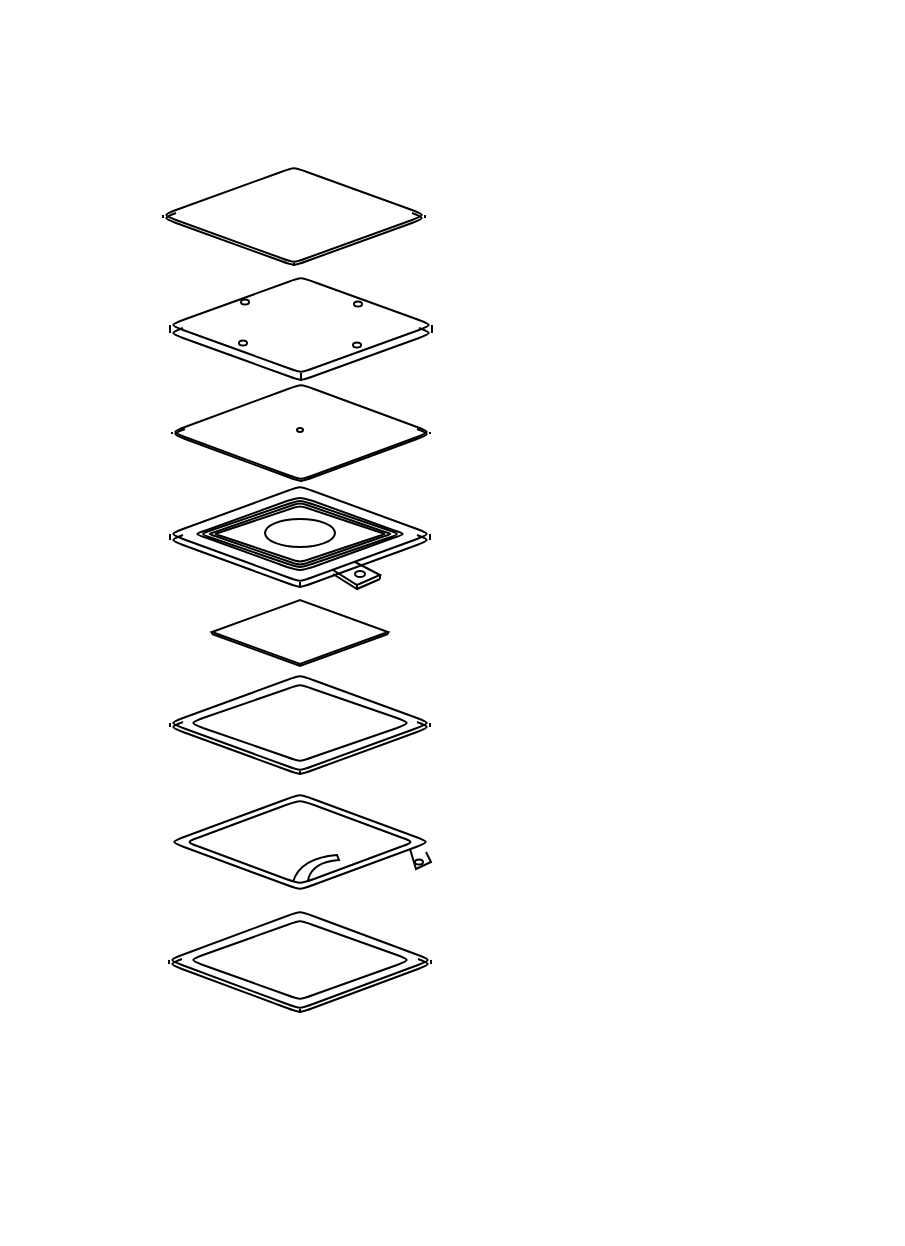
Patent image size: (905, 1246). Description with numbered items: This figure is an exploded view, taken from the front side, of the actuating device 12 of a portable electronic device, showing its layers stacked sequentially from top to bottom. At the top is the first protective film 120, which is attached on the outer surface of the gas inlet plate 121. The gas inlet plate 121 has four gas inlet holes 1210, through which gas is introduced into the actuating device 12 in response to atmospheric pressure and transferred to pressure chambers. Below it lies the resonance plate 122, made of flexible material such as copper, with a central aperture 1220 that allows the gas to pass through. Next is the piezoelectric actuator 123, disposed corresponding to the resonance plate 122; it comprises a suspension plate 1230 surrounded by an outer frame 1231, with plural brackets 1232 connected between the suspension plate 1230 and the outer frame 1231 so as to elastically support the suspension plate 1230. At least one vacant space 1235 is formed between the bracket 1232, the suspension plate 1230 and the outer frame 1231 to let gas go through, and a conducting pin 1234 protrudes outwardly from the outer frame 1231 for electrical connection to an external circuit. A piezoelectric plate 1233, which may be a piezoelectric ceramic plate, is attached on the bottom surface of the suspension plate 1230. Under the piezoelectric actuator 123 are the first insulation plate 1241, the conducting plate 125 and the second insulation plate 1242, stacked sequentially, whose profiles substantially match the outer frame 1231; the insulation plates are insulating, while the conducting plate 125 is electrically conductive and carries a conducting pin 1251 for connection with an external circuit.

The actuating device 12 is at (639, 33).
The first protective film 120 is at (383, 215).
The gas inlet plate 121 is at (417, 324).
The gas inlet hole 1210 is at (244, 300).
The resonance plate 122 is at (456, 429).
The central aperture 1220 is at (303, 428).
The piezoelectric actuator 123 is at (309, 531).
The suspension plate 1230 is at (245, 533).
The outer frame 1231 is at (183, 535).
The bracket 1232 is at (238, 560).
The piezoelectric plate 1233 is at (328, 627).
The conducting pin 1234 is at (366, 578).
The vacant space 1235 is at (308, 497).
The first insulation plate 1241 is at (378, 695).
The conducting plate 125 is at (426, 820).
The conducting pin 1251 is at (431, 865).
The second insulation plate 1242 is at (402, 943).